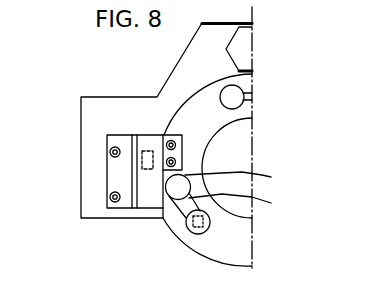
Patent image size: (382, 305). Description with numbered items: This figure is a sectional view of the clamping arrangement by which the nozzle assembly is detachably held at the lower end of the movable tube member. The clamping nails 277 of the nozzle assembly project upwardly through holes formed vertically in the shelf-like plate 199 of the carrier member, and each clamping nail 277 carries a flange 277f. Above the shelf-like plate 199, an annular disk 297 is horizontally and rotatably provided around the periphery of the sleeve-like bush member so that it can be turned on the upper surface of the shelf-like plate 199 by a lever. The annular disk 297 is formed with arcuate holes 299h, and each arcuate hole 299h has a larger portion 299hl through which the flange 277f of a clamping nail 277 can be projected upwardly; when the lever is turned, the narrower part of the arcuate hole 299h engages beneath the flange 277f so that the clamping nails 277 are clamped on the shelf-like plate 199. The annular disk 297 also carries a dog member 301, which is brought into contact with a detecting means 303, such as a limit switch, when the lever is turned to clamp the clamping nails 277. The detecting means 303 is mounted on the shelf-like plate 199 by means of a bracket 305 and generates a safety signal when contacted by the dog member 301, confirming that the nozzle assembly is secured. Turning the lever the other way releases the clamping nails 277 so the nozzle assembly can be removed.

The shelf-like plate 199 is at (181, 62).
The annular disk 297 is at (248, 234).
The arcuate hole 299h is at (247, 92).
The larger portion 299hl is at (257, 180).
The dog member 301 is at (139, 135).
The detecting means 303 is at (142, 203).
The bracket 305 is at (112, 167).
The clamping nail 277 is at (200, 233).
The flange 277f is at (189, 235).